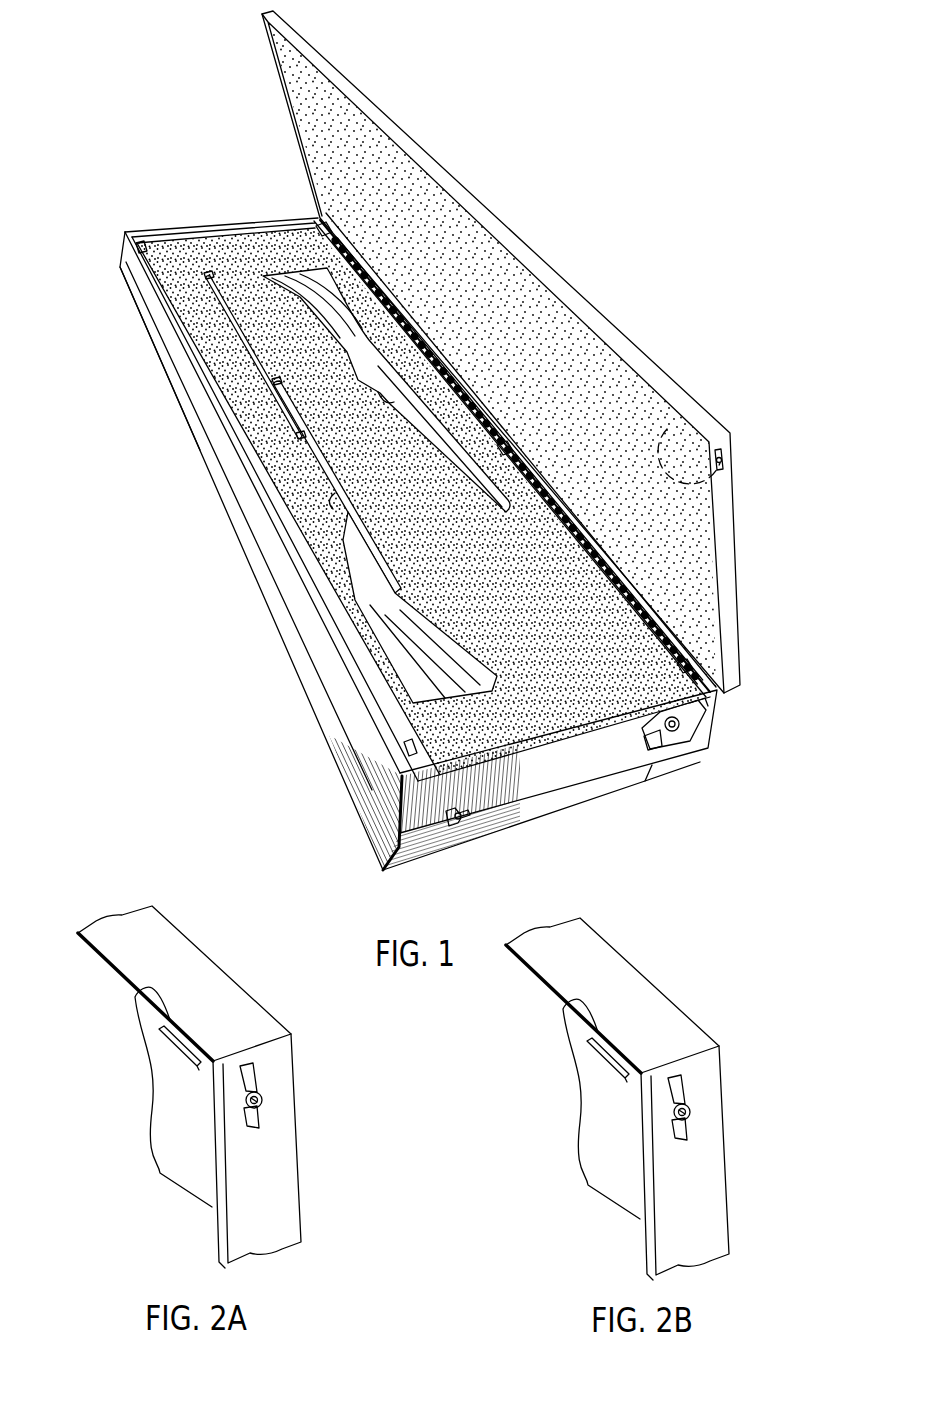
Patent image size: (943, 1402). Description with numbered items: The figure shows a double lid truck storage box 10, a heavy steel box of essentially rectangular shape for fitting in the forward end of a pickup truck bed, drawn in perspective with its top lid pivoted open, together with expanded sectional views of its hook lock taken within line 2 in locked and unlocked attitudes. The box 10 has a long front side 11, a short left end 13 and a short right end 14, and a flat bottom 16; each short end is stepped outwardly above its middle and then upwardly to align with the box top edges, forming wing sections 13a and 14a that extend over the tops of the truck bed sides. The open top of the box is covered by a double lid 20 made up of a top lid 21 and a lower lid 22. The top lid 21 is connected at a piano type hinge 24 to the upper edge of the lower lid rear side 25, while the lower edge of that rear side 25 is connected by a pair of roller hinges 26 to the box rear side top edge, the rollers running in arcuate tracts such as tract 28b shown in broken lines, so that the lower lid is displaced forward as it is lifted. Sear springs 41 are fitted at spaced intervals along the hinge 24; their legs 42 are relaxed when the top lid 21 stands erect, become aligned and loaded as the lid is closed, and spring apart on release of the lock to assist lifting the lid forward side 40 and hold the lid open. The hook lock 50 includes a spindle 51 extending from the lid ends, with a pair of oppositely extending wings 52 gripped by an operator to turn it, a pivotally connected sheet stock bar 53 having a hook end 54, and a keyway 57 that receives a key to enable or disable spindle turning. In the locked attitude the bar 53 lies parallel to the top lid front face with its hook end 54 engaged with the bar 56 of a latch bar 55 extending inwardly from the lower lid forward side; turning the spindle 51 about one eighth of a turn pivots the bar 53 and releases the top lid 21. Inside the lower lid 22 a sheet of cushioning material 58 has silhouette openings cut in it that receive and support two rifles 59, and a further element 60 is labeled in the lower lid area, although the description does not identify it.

In FIG. 1, the double lid truck storage box 10 is at (424, 505).
In FIG. 1, the front side 11 is at (296, 676).
In FIG. 1, the left end 13 is at (156, 352).
In FIG. 1, the wing section 13a is at (124, 330).
In FIG. 1, the right end 14 is at (540, 812).
In FIG. 1, the wing section 14a is at (657, 785).
In FIG. 1, the flat bottom 16 is at (343, 790).
In FIG. 1, the double lid 20 is at (498, 346).
In FIG. 1, the top lid 21 is at (492, 192).
In FIG. 2A, the top lid 21 is at (190, 978).
In FIG. 2B, the top lid 21 is at (612, 995).
In FIG. 1, the lower lid 22 is at (140, 245).
In FIG. 1, the hinge 24 is at (598, 392).
In FIG. 1, the rear side 25 is at (712, 728).
In FIG. 1, the roller hinges 26 is at (676, 740).
In FIG. 1, the arcuate tract 28b is at (712, 745).
In FIG. 1, the line 2— 2 is at (664, 430).
In FIG. 1, the lid forward side 40 is at (365, 97).
In FIG. 1, the sear springs 41 is at (329, 228).
In FIG. 1, the sear spring legs 42 is at (334, 237).
In FIG. 1, the hook lock 50 is at (735, 433).
In FIG. 2A, the hook lock 50 is at (326, 1101).
In FIG. 2B, the hook lock 50 is at (754, 1108).
In FIG. 2A, the spindle 51 is at (266, 1091).
In FIG. 2B, the spindle 51 is at (751, 1119).
In FIG. 2A, the wings 52 is at (262, 1070).
In FIG. 2B, the wings 52 is at (751, 1108).
In FIG. 2A, the bar 53 is at (196, 1066).
In FIG. 2B, the bar 53 is at (573, 1109).
In FIG. 2A, the hook end 54 is at (161, 1031).
In FIG. 2B, the hook end 54 is at (547, 1033).
In FIG. 1, the latch bar 55 is at (138, 248).
In FIG. 1, the bar 56 is at (345, 777).
In FIG. 2A, the keyway 57 is at (262, 1103).
In FIG. 2B, the keyway 57 is at (751, 1141).
In FIG. 1, the cushioning material 58 is at (449, 531).
In FIG. 1, the rifles 59 is at (300, 437).
In FIG. 1, the rail end block 60 is at (288, 400).